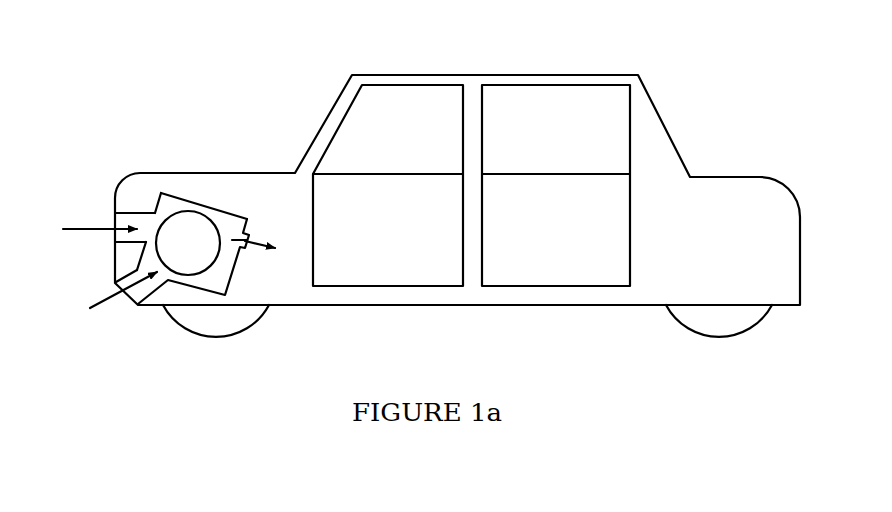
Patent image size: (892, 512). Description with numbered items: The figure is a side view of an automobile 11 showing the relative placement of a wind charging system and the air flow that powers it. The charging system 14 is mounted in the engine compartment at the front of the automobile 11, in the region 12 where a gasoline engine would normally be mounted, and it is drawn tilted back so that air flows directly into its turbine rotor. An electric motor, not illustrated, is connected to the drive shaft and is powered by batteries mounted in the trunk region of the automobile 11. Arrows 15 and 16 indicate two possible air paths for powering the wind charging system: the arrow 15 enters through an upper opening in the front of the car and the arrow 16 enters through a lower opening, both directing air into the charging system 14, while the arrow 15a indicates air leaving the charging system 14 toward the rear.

The automobile 11 is at (443, 73).
The front body portion 12 is at (193, 183).
The charging system 14 is at (225, 212).
The arrow 15 is at (86, 229).
The outgoing flow 15a is at (272, 255).
The arrow 16 is at (110, 302).